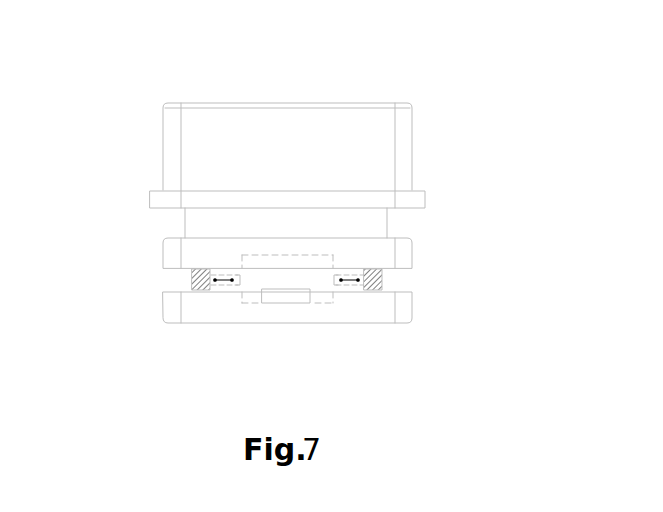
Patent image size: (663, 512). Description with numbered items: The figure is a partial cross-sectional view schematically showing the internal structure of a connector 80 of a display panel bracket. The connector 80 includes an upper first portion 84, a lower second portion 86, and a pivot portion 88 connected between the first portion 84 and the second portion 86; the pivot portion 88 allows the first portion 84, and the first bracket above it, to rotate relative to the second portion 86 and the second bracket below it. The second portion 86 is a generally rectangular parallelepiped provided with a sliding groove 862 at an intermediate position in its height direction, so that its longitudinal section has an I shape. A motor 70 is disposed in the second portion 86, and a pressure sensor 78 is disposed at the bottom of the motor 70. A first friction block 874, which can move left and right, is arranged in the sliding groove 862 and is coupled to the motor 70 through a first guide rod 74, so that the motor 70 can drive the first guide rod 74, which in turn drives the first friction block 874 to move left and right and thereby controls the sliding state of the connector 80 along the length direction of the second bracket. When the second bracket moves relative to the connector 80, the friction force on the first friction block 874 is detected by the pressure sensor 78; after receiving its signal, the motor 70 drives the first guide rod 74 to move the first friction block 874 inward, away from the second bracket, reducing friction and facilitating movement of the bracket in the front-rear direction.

The connector 80 is at (284, 196).
The first portion 84 is at (163, 154).
The pivot portion 88 is at (185, 225).
The second portion 86 is at (292, 302).
The sliding groove 862 is at (398, 283).
The pressure sensor 78 is at (285, 297).
The motor 70 is at (275, 258).
The first friction block 874 is at (377, 277).
The first guide rod 74 is at (353, 280).